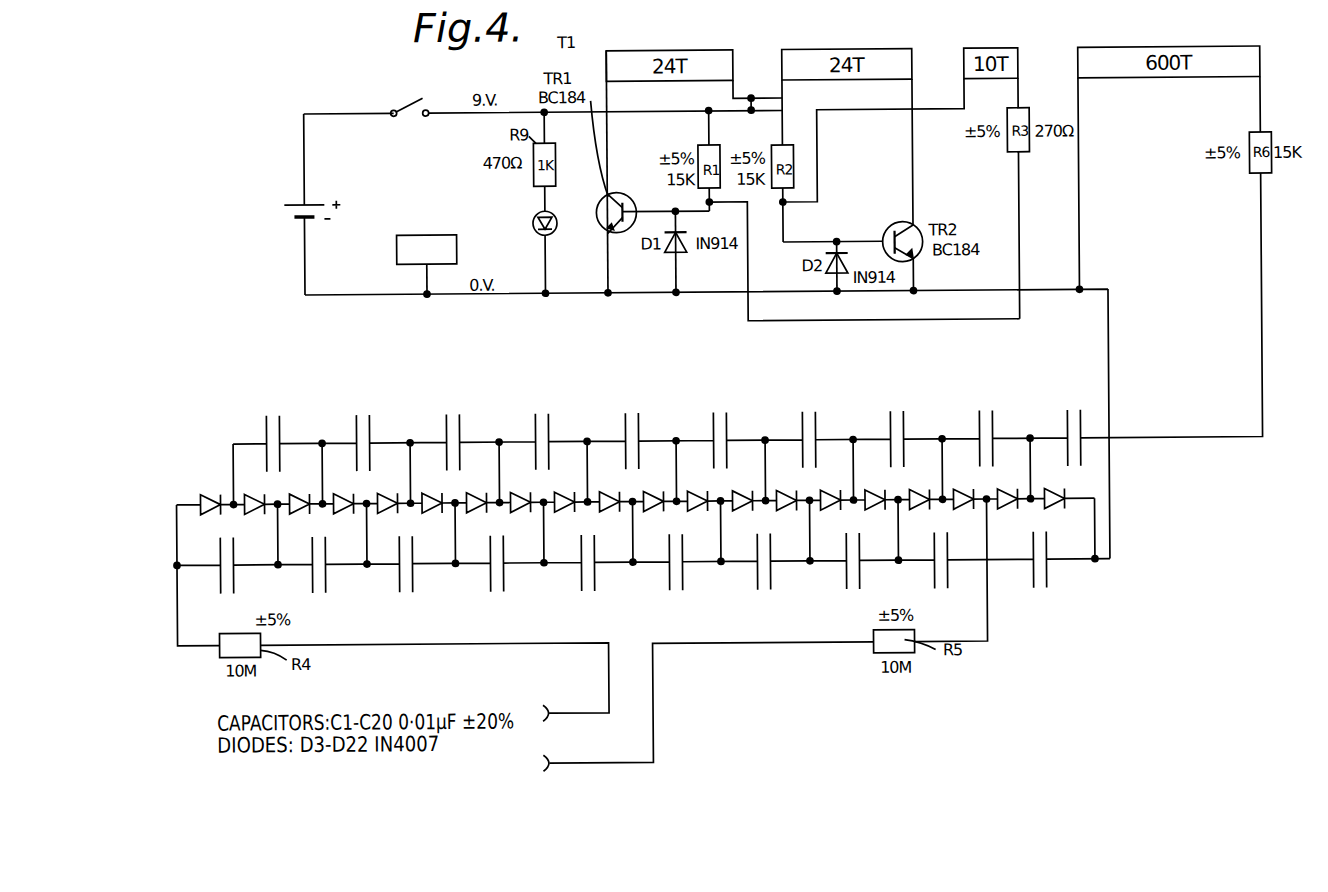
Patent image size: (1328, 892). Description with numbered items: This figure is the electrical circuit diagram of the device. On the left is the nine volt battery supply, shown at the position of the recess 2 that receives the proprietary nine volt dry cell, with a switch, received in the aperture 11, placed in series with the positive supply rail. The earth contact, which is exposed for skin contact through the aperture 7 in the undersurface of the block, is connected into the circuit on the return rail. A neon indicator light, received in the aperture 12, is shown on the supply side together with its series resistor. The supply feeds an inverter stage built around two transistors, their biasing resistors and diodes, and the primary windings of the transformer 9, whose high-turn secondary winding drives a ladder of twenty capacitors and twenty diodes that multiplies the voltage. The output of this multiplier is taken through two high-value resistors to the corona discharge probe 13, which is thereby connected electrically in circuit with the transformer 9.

The recess 2 is at (293, 203).
The aperture 7 is at (418, 236).
The transformer 9 is at (275, 378).
The aperture 11 is at (409, 100).
The aperture 12 is at (540, 234).
The corona discharge probe 13 is at (556, 752).